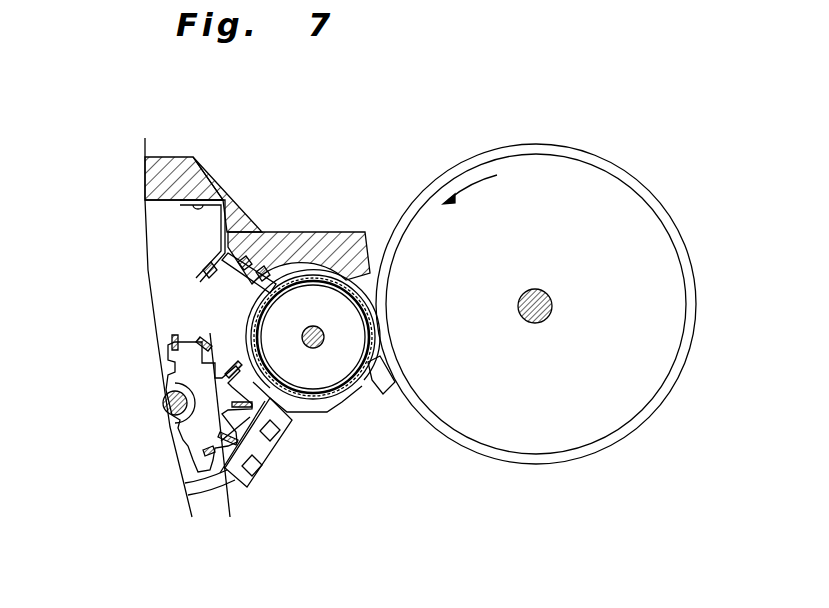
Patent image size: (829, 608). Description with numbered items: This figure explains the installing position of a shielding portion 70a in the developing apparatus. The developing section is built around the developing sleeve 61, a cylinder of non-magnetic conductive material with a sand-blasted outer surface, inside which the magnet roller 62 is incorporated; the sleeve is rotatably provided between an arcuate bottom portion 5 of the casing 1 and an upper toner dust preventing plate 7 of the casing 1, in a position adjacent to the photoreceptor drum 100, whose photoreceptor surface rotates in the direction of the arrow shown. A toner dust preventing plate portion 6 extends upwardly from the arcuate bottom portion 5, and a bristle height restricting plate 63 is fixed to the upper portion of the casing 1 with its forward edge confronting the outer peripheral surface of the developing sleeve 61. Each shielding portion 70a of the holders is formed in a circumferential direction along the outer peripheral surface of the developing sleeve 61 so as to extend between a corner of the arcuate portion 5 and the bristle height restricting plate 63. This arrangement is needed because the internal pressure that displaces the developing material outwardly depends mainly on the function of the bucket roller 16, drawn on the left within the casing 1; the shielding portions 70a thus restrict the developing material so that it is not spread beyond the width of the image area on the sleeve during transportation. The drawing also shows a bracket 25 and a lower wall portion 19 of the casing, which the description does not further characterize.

The casing 1 is at (176, 150).
The arcuate bottom portion 5 is at (338, 414).
The toner dust preventing plate portion 6 is at (392, 368).
The upper toner dust preventing plate 7 is at (338, 232).
The bucket roller 16 is at (156, 318).
The housing bottom wall 19 is at (224, 484).
The bracket 25 is at (268, 448).
The developing sleeve 61 is at (362, 293).
The magnet roller 62 is at (353, 342).
The bristle height restricting plate 63 is at (288, 275).
The shielding portion 70a is at (250, 332).
The photoreceptor drum 100 is at (542, 143).